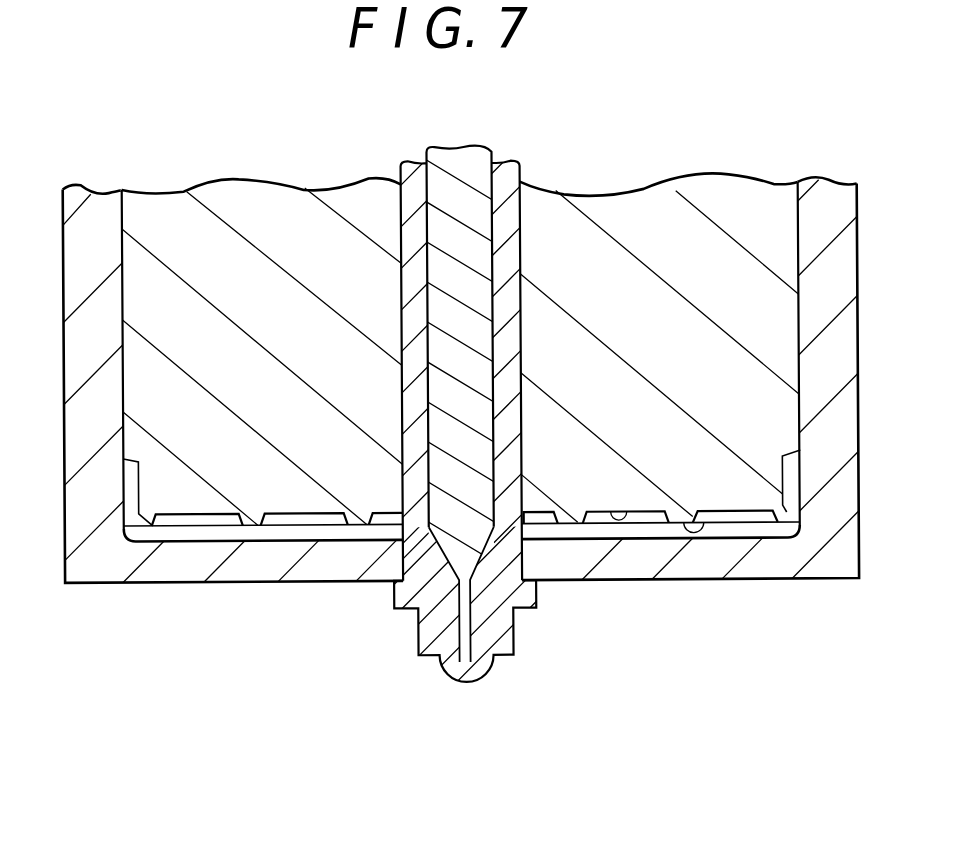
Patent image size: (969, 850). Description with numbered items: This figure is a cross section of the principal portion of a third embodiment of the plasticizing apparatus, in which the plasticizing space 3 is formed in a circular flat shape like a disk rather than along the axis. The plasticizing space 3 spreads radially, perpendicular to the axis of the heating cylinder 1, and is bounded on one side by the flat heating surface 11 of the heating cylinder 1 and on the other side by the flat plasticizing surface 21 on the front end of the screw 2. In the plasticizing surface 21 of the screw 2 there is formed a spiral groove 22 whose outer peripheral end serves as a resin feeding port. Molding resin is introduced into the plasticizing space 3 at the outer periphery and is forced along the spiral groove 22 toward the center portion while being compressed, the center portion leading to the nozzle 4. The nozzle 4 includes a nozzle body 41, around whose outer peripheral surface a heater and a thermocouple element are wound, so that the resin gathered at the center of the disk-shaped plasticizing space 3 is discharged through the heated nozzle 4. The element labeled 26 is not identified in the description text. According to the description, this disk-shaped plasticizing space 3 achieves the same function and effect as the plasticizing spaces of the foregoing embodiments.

The heating cylinder 1 is at (155, 606).
The screw 2 is at (756, 492).
The plasticizing space 3 is at (286, 545).
The nozzle 4 is at (504, 680).
The nozzle body 41 is at (498, 620).
The heating surface 11 is at (213, 539).
The plasticizing surface 21 is at (690, 519).
The spiral groove 22 is at (630, 510).
The gap between body and housing wall 26 is at (123, 386).